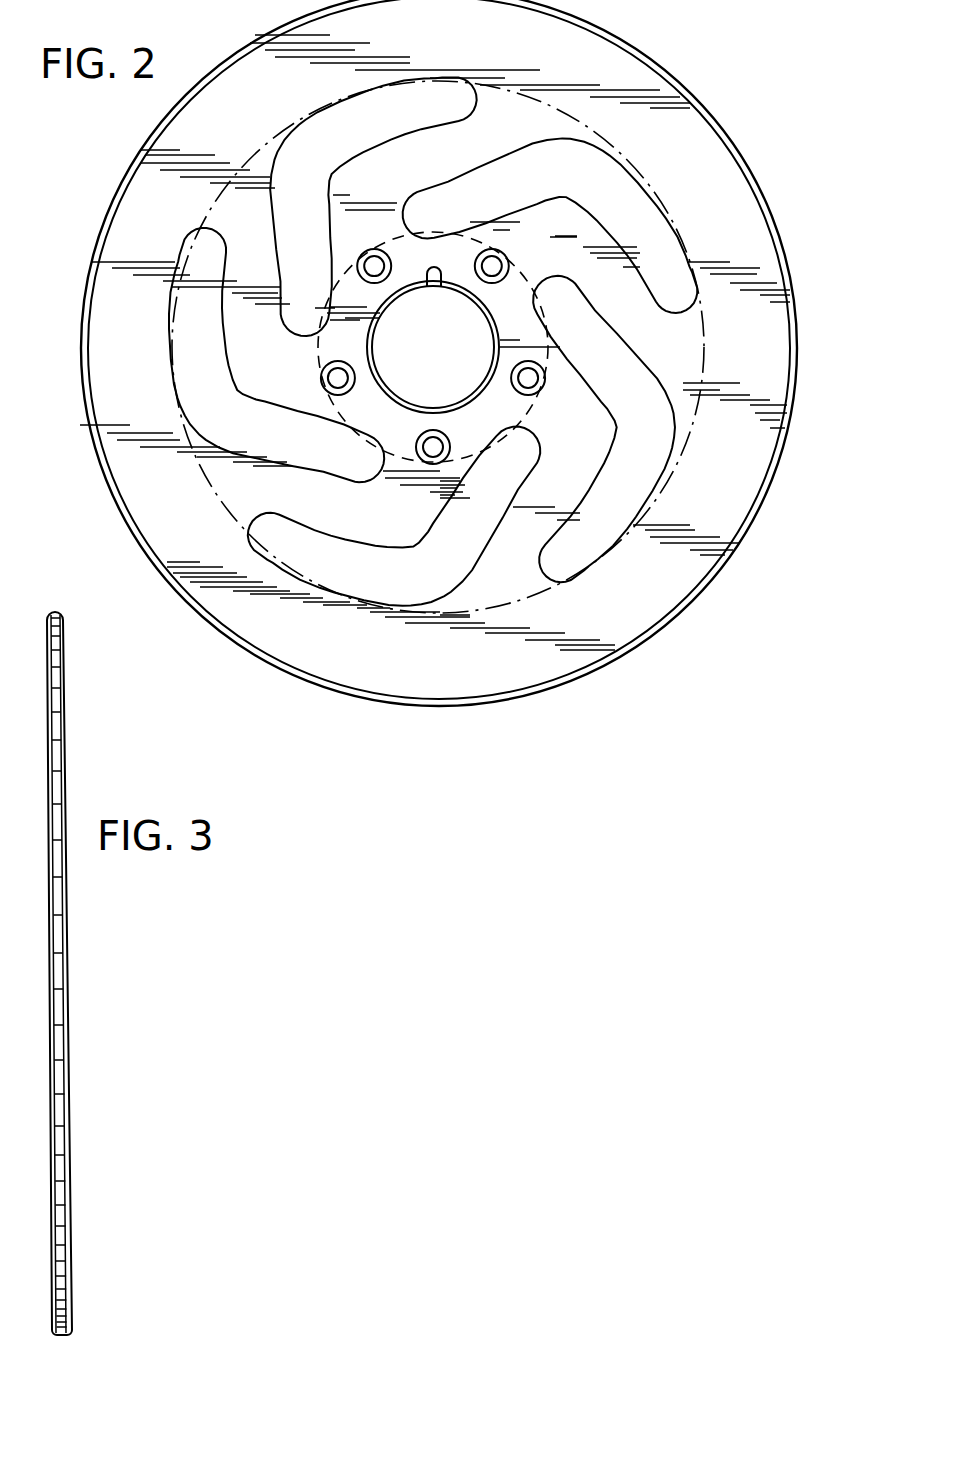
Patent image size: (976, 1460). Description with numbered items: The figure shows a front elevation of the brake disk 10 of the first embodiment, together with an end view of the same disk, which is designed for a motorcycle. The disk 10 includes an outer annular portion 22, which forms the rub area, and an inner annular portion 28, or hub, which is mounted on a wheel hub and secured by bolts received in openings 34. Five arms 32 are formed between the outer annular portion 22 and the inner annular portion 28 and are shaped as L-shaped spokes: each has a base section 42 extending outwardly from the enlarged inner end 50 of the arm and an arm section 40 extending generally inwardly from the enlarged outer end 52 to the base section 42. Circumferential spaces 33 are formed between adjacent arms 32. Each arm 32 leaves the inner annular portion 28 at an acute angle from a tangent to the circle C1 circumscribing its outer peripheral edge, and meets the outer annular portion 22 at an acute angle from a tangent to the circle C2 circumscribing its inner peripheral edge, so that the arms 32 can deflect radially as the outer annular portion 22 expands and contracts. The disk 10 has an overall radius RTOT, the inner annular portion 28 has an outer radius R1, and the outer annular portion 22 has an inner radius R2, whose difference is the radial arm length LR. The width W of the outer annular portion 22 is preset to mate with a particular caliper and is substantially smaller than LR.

In FIG. 2, the disk 10 is at (688, 68).
In FIG. 3, the disk 10 is at (88, 757).
In FIG. 2, the outer annular portion 22 is at (400, 669).
In FIG. 3, the outer annular portion 22 is at (65, 660).
In FIG. 2, the inner annular portion 28 is at (550, 318).
In FIG. 2, the arms 32 is at (340, 160).
In FIG. 2, the spaces 33 is at (315, 183).
In FIG. 2, the openings 34 is at (442, 235).
In FIG. 2, the arm section 40 is at (435, 122).
In FIG. 2, the base section 42 is at (327, 252).
In FIG. 2, the inner end 50 is at (544, 252).
In FIG. 2, the outer end 52 is at (260, 213).
In FIG. 2, the circle circumscribing outer peripheral edge of inner annular portion C1 is at (513, 278).
In FIG. 2, the circle circumscribing inner peripheral edge of outer annular portion C2 is at (705, 333).
In FIG. 2, the radius of outer peripheral edge of inner annular portion R1 is at (322, 348).
In FIG. 2, the radius of inner peripheral edge of outer annular portion R2 is at (350, 107).
In FIG. 2, the overall radius RTOT is at (507, 7).
In FIG. 2, the radial length of arms LR is at (320, 377).
In FIG. 2, the width of outer annular portion W is at (197, 460).